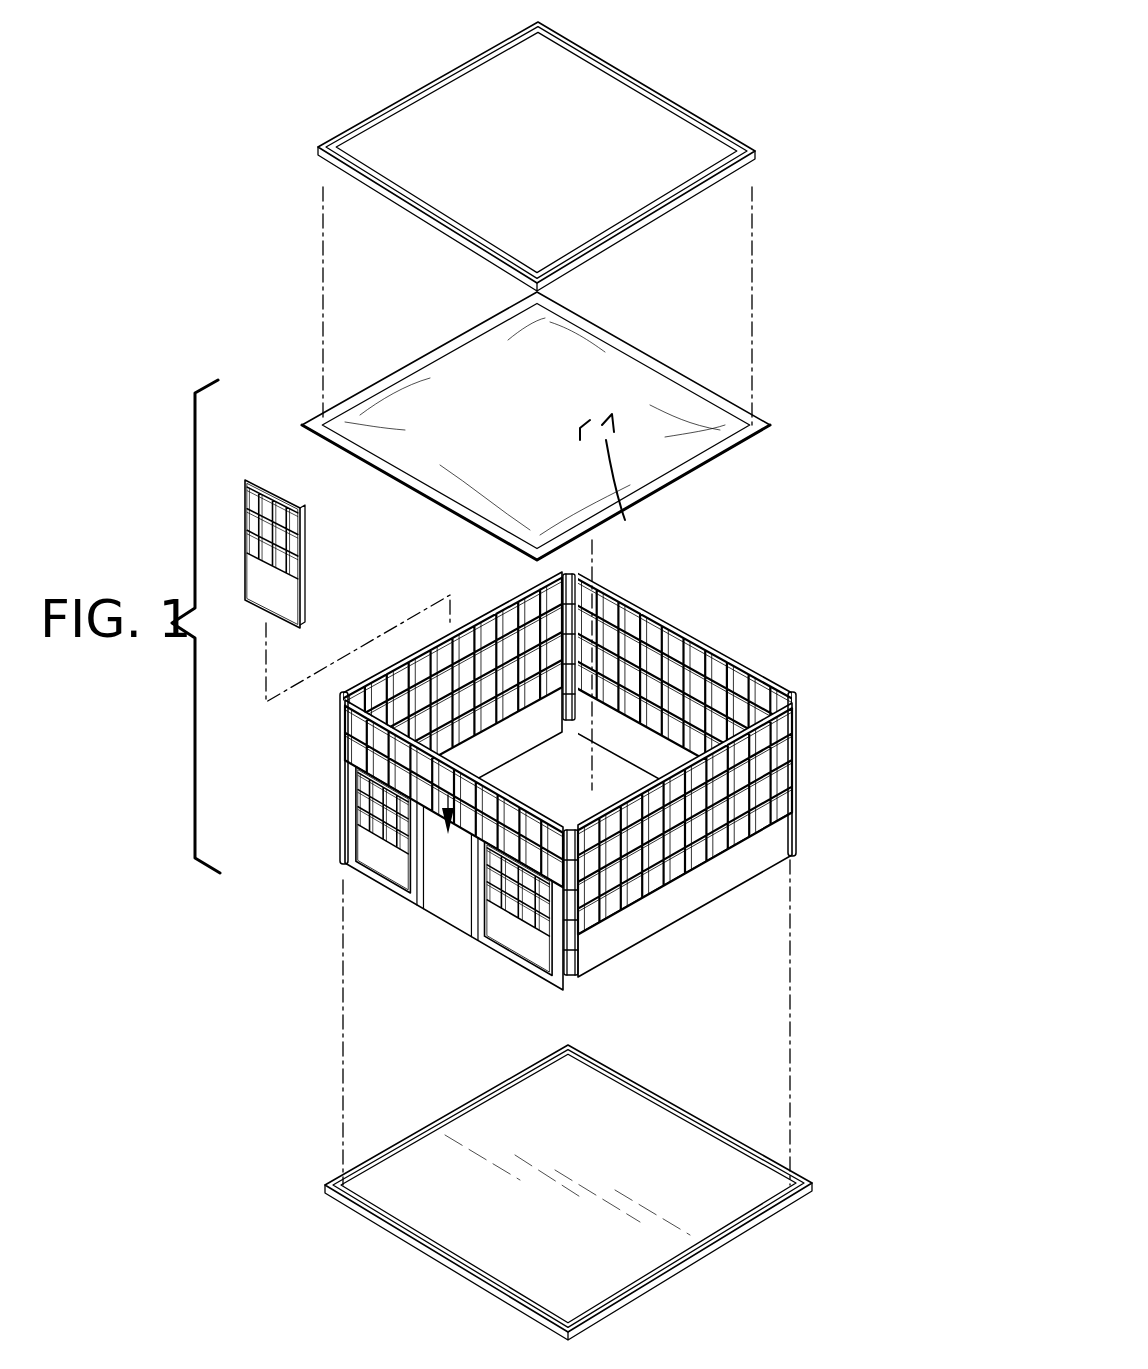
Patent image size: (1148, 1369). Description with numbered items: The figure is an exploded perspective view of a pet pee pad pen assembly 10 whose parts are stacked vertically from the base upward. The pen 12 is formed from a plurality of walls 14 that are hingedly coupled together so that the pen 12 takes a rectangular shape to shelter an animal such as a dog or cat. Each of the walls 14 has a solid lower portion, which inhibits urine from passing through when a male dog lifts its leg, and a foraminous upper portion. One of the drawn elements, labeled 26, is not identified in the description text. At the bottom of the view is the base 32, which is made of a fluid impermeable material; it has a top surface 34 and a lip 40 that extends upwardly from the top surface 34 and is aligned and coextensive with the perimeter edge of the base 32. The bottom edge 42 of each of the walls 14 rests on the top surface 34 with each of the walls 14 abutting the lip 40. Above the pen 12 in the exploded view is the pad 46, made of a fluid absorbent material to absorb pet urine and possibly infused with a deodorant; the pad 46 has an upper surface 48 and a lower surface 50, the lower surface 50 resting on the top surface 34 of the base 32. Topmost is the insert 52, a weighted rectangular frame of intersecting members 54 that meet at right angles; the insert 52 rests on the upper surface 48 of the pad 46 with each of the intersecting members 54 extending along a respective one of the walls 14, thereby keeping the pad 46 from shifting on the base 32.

The pet pee pad pen assembly 10 is at (872, 566).
The pen 12 is at (866, 708).
The walls 14 is at (418, 640).
The door 26 is at (263, 485).
The base 32 is at (815, 1183).
The top surface 34 is at (640, 1148).
The lip 40 is at (420, 1130).
The bottom edge 42 is at (732, 893).
The pad 46 is at (698, 380).
The upper surface 48 is at (476, 373).
The lower surface 50 is at (625, 520).
The insert 52 is at (753, 147).
The intersecting members 54 is at (400, 103).